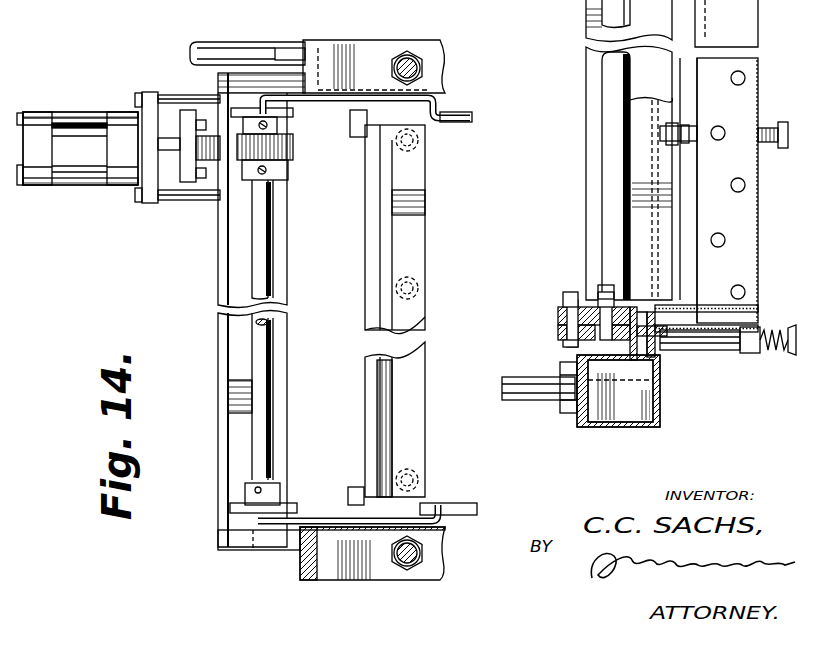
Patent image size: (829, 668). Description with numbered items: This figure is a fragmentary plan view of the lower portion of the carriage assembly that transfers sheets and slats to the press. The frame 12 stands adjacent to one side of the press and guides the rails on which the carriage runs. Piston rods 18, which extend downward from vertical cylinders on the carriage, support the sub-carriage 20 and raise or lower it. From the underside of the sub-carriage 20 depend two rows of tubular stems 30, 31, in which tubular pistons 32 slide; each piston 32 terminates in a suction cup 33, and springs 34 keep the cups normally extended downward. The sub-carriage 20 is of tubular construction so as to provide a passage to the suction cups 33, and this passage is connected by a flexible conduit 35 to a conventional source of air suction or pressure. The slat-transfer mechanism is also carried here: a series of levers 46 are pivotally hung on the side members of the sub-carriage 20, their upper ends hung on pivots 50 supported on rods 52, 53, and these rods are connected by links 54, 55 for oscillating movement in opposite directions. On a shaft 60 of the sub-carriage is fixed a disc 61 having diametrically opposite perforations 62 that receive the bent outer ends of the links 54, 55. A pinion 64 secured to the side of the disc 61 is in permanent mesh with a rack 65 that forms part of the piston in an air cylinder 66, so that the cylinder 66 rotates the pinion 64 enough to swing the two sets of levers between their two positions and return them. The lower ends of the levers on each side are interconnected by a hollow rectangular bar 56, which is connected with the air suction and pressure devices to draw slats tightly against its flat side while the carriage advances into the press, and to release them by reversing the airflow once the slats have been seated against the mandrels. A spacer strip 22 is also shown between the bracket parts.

The frame 12 is at (449, 539).
The piston rod 18 is at (407, 62).
The sub-carriage 20 is at (328, 50).
The spacer strip 22 is at (757, 312).
The tubular stem 30 is at (680, 128).
The tubular stem 31 is at (695, 128).
The tubular piston 32 is at (774, 340).
The suction cup 33 is at (792, 355).
The spring 34 is at (775, 125).
The flexible conduit 35 is at (268, 47).
The lever 46 is at (562, 300).
The pivot 50 is at (567, 297).
The rod 52 is at (557, 330).
The rod 53 is at (600, 303).
The link 54 is at (338, 106).
The link 55 is at (380, 100).
The hollow rectangular bar 56 is at (758, 242).
The shaft 60 is at (270, 257).
The disc 61 is at (243, 112).
The perforation 62 is at (283, 118).
The pinion 64 is at (295, 155).
The rack 65 is at (212, 160).
The air cylinder 66 is at (42, 117).